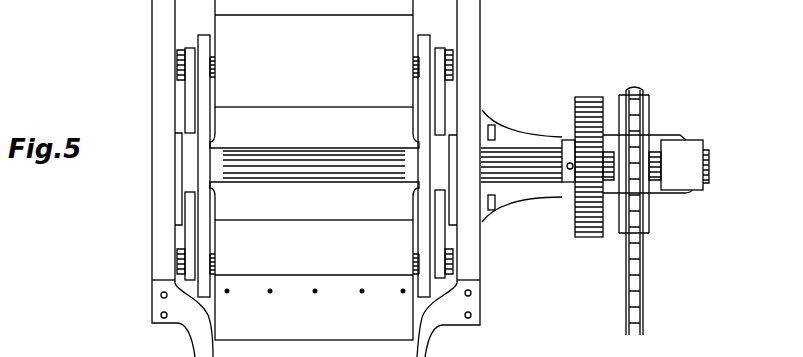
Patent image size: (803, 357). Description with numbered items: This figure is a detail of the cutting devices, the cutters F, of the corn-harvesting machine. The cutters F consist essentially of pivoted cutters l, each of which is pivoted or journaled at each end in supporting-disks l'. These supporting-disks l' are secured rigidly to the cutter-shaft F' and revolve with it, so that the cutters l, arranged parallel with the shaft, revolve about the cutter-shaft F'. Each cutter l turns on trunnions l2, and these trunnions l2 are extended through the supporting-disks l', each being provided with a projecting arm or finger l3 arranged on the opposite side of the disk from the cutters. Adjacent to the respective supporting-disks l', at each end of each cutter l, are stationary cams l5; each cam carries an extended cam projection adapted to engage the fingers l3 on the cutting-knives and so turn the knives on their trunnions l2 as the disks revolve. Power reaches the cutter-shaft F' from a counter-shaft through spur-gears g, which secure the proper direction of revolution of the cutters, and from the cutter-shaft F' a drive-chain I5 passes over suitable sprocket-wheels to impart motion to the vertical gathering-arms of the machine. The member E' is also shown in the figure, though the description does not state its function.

The pivoted cutter l is at (377, 170).
The supporting-disk l' is at (314, 166).
The trunnion l2 is at (517, 266).
The projecting arm or finger l3 is at (512, 230).
The stationary cam l5 is at (440, 182).
The cutters F is at (285, 178).
The cutter-shaft F' is at (314, 180).
The shaft E' is at (595, 138).
The spur-gear g is at (588, 97).
The drive-chain I5 is at (642, 292).